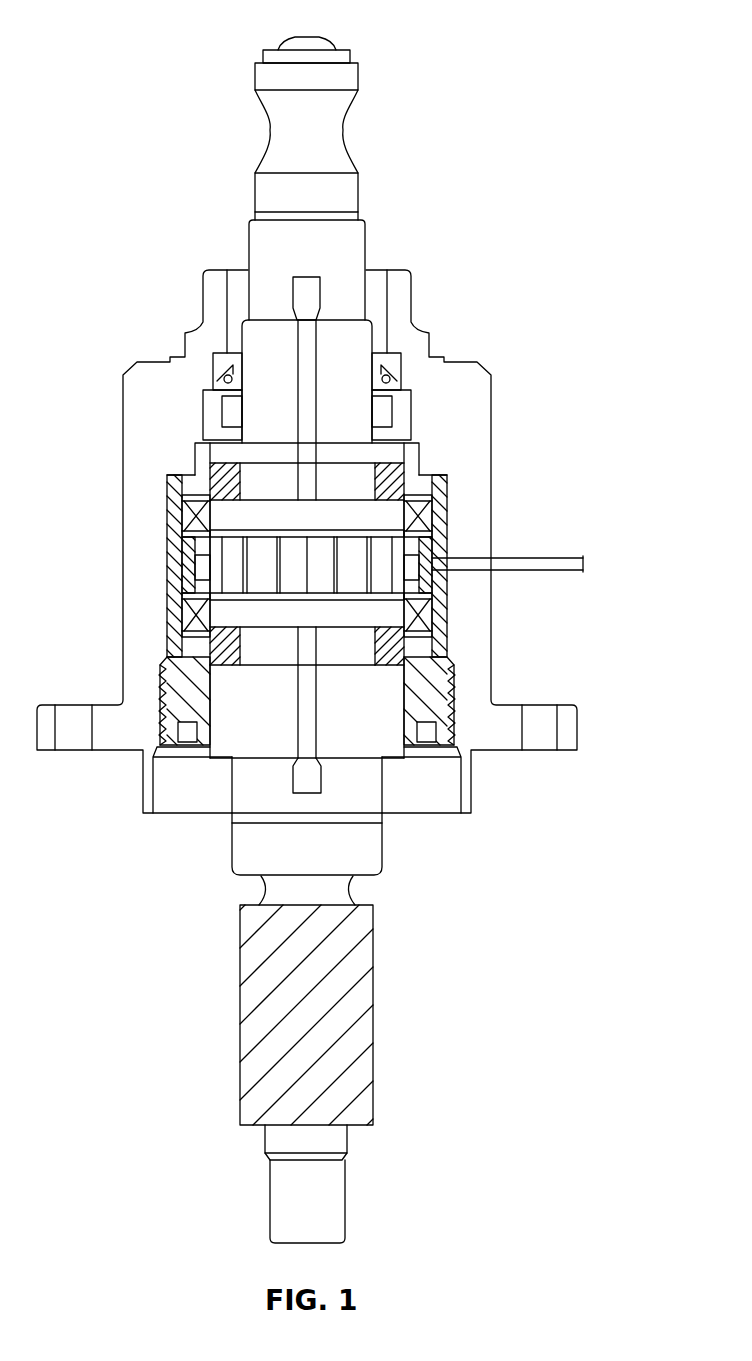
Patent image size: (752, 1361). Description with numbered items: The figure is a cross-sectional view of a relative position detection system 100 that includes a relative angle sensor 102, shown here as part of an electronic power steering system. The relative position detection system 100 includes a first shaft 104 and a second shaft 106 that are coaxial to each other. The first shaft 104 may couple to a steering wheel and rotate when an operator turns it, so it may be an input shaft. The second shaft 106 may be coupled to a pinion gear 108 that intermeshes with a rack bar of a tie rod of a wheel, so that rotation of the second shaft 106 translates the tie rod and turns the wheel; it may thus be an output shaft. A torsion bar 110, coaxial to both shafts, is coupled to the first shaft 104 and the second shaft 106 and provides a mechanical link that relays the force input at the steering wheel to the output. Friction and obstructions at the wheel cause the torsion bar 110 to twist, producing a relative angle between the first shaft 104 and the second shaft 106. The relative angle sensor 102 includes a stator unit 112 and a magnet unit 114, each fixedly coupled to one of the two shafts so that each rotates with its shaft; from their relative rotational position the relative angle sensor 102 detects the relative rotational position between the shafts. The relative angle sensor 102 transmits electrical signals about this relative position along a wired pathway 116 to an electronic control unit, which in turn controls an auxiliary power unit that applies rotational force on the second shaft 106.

The relative position detection system 100 is at (580, 93).
The relative angle sensor 102 is at (449, 491).
The first shaft 104 is at (348, 245).
The second shaft 106 is at (363, 848).
The pinion gear 108 is at (263, 1013).
The torsion bar 110 is at (322, 296).
The stator unit 112 is at (262, 512).
The magnet unit 114 is at (288, 567).
The wired pathway 116 is at (534, 556).